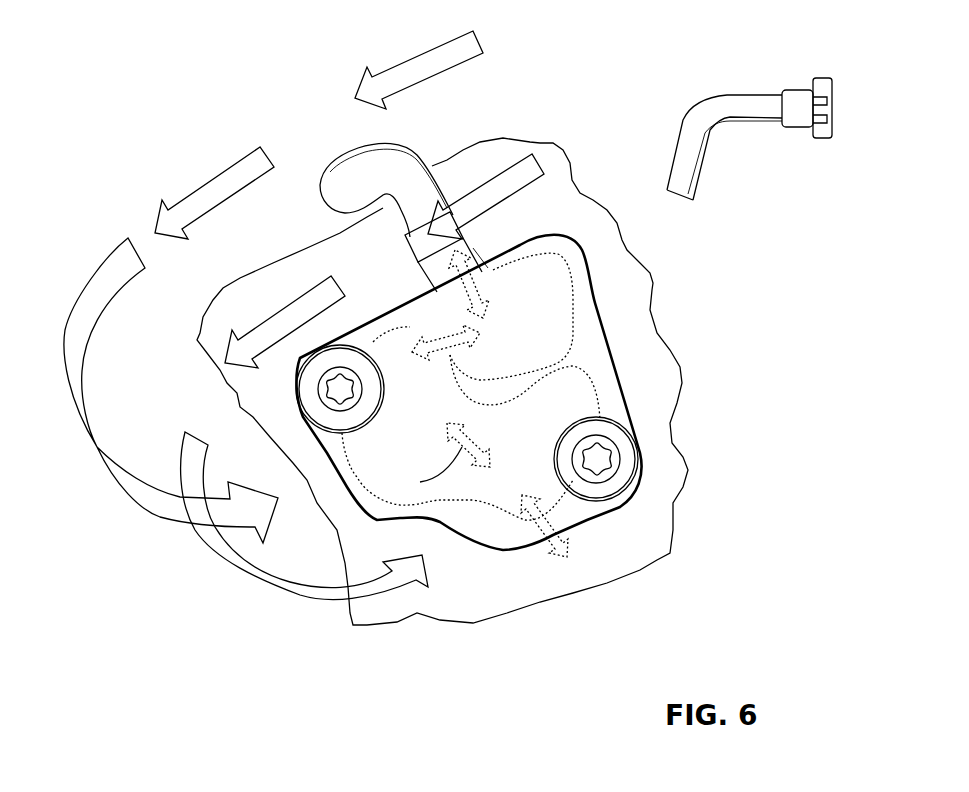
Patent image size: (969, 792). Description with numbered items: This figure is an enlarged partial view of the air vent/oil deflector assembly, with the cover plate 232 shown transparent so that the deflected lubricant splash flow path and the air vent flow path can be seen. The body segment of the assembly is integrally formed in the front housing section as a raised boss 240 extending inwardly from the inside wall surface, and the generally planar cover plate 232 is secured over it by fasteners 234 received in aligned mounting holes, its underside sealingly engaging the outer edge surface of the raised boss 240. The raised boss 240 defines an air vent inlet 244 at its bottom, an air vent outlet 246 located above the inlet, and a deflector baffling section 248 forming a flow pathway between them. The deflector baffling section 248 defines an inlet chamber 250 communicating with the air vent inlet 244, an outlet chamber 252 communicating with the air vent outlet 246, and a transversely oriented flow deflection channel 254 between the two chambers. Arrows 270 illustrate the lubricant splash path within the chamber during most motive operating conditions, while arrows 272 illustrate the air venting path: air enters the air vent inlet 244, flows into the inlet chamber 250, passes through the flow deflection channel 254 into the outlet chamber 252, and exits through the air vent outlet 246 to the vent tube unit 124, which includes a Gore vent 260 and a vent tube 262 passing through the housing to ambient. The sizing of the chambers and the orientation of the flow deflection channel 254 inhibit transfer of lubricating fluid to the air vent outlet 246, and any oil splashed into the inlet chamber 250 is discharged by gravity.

The vent tube unit 124 is at (400, 138).
The vent tube 262 is at (420, 194).
The Gore vent 260 is at (466, 241).
The air vent outlet 246 is at (447, 283).
The flow deflection channel 254 is at (443, 337).
The outlet chamber 252 is at (527, 348).
The inlet chamber 250 is at (533, 451).
The deflector baffling section 248 is at (539, 378).
The air vent inlet 244 is at (528, 538).
The fasteners 234 is at (328, 395).
The cover plate 232 is at (503, 537).
The raised boss 240 is at (630, 537).
The arrows 272 is at (422, 470).
The arrows 270 is at (222, 180).